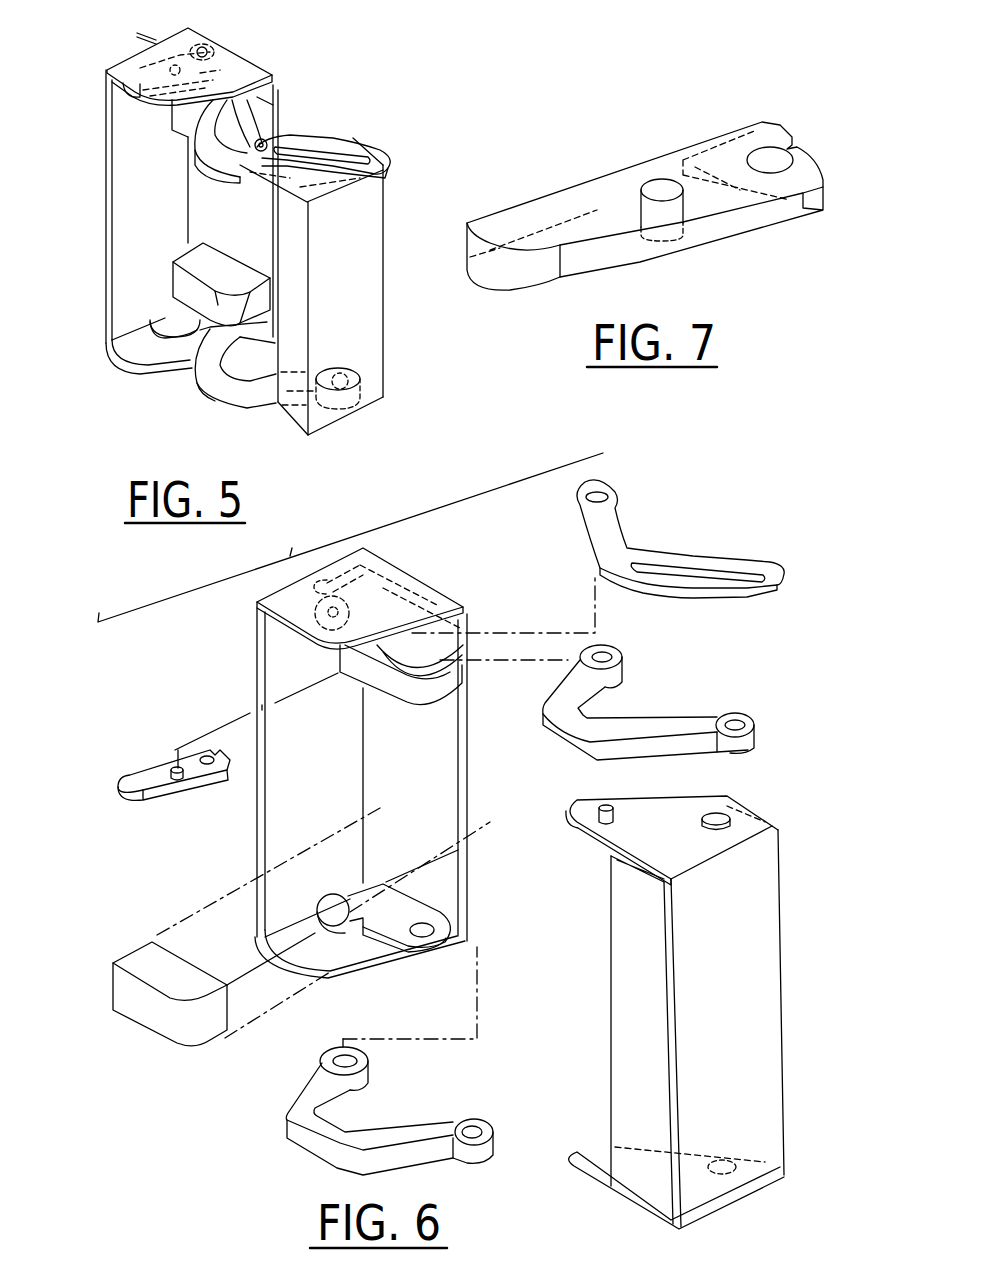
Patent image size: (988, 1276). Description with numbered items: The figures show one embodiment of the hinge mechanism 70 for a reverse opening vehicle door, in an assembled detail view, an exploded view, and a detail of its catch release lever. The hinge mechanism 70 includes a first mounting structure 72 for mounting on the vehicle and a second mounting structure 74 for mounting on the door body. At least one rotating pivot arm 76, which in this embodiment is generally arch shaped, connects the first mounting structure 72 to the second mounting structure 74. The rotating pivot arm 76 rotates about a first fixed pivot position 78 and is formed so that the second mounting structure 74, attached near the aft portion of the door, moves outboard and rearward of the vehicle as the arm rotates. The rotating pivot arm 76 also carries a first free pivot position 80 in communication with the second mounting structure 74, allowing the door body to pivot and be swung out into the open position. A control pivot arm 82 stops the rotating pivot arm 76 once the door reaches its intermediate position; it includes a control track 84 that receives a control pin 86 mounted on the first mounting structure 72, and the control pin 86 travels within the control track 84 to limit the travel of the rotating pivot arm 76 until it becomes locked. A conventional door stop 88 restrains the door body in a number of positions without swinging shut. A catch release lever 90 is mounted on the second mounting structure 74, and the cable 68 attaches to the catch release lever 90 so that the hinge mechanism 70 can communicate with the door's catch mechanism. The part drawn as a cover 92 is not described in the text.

In FIG. 5, the cable 68 is at (150, 40).
In FIG. 5, the hinge mechanism 70 is at (422, 59).
In FIG. 6, the hinge mechanism 70 is at (757, 447).
In FIG. 5, the first mounting structure 72 is at (384, 308).
In FIG. 5, the second mounting structure 74 is at (105, 204).
In FIG. 6, the second mounting structure 74 is at (450, 770).
In FIG. 5, the rotating pivot arm 76 is at (238, 172).
In FIG. 6, the rotating pivot arm 76 is at (585, 752).
In FIG. 5, the first fixed pivot position 78 is at (365, 413).
In FIG. 6, the first free pivot position 80 is at (615, 650).
In FIG. 5, the control pivot arm 82 is at (275, 113).
In FIG. 6, the control pivot arm 82 is at (763, 560).
In FIG. 5, the control track 84 is at (390, 158).
In FIG. 6, the control track 84 is at (762, 588).
In FIG. 5, the control pin 86 is at (267, 143).
In FIG. 6, the control pin 86 is at (612, 808).
In FIG. 5, the door stop 88 is at (187, 257).
In FIG. 6, the door stop 88 is at (407, 702).
In FIG. 5, the catch release lever 90 is at (138, 103).
In FIG. 7, the catch release lever 90 is at (687, 253).
In FIG. 6, the catch release lever 90 is at (150, 763).
In FIG. 6, the cover 92 is at (767, 972).